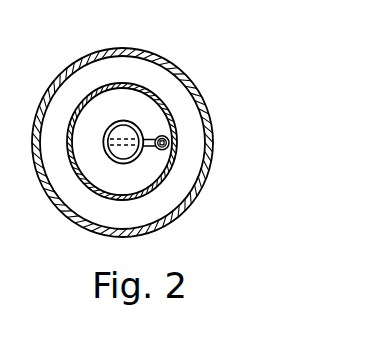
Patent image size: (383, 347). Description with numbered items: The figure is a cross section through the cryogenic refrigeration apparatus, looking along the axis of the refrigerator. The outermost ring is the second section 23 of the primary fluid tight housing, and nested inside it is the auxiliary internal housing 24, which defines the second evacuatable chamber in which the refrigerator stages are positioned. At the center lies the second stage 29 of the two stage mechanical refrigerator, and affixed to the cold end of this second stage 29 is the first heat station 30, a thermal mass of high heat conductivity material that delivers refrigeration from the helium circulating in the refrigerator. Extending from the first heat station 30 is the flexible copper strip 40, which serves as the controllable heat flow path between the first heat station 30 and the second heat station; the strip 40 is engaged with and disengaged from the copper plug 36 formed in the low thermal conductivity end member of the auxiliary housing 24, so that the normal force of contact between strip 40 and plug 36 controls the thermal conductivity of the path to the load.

The second section 23 is at (187, 208).
The auxiliary internal housing 24 is at (170, 177).
The second stage 29 is at (131, 128).
The first heat station 30 is at (122, 121).
The plug 36 is at (169, 152).
The flexible copper strip 40 is at (163, 136).